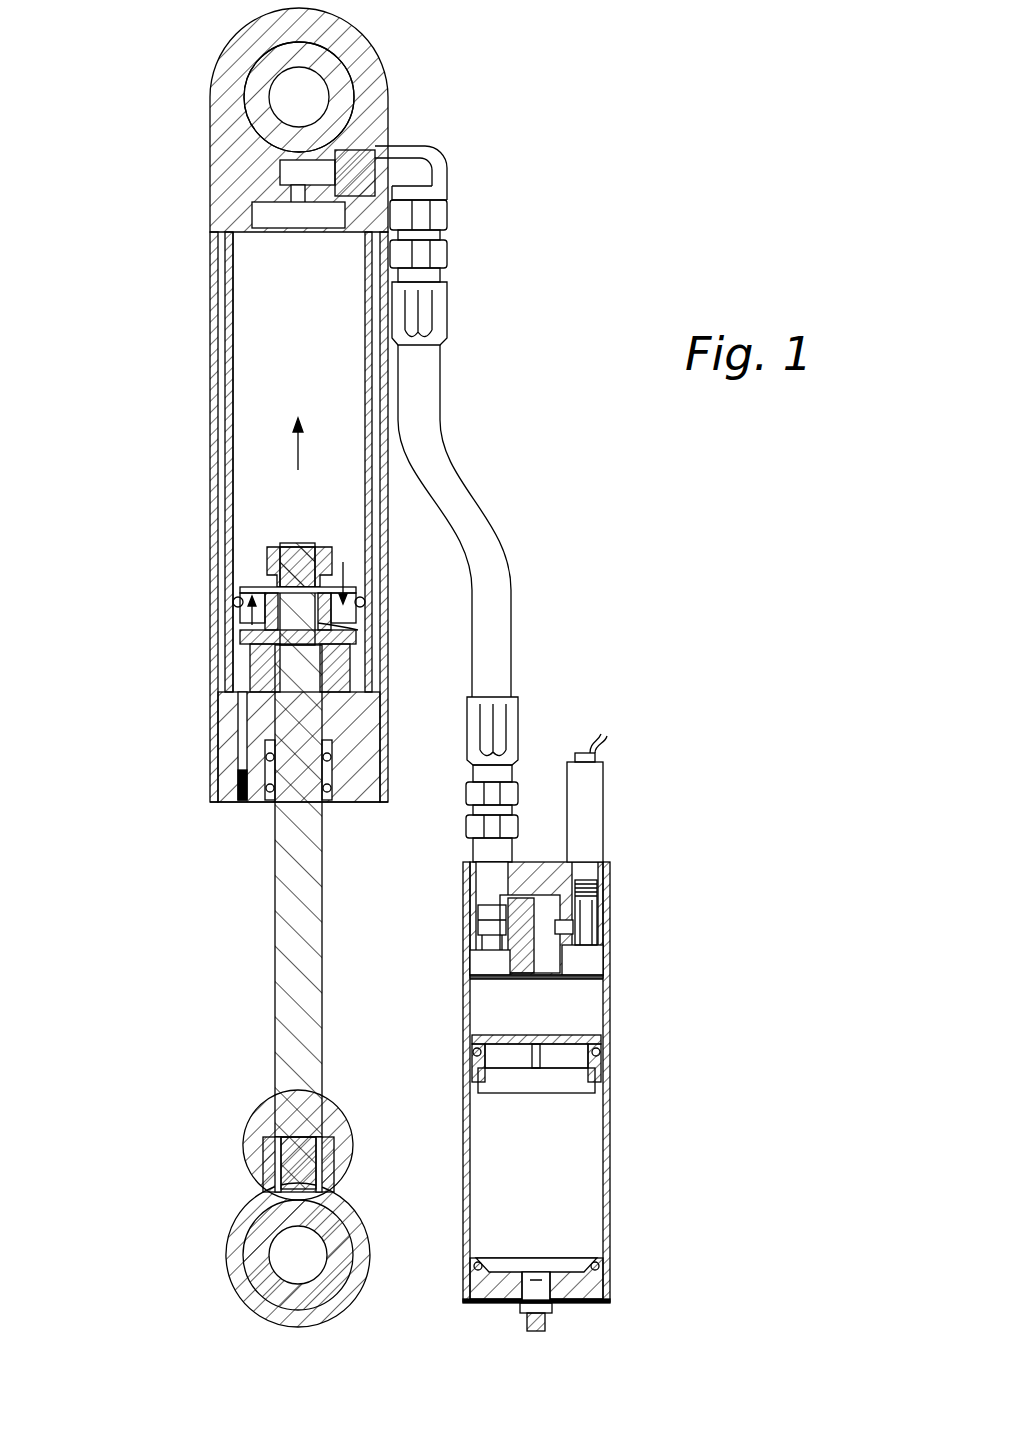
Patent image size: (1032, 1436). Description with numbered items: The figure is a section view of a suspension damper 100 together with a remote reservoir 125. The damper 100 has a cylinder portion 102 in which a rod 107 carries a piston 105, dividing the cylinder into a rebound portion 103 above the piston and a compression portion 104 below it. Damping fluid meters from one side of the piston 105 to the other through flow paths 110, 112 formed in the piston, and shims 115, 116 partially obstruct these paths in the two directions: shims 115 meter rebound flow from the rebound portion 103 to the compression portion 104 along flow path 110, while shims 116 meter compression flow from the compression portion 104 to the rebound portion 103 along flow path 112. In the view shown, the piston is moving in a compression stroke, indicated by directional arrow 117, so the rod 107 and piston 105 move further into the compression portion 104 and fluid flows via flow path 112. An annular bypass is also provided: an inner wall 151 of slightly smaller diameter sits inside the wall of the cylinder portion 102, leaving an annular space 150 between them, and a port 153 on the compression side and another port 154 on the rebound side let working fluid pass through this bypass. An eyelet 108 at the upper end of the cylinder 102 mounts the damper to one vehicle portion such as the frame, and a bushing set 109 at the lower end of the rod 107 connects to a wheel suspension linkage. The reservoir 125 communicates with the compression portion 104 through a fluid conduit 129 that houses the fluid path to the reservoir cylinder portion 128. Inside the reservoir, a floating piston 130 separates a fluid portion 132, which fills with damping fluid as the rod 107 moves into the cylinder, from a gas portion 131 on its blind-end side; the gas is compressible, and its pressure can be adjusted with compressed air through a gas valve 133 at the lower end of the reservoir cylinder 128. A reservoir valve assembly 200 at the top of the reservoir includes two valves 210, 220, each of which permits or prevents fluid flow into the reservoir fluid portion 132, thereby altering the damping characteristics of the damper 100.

The suspension damper 100 is at (542, 196).
The cylinder portion 102 is at (214, 340).
The rebound portion 103 is at (247, 662).
The compression portion 104 is at (262, 278).
The piston 105 is at (300, 540).
The rod 107 is at (285, 981).
The eyelet 108 is at (248, 92).
The bushing set 109 is at (250, 1241).
The flow path 110 is at (252, 620).
The flow path 112 is at (350, 572).
The shims 115 is at (250, 585).
The shims 116 is at (340, 630).
The directional arrow 117 is at (300, 466).
The reservoir 125 is at (738, 1070).
The cylinder portion 128 is at (612, 1123).
The fluid conduit 129 is at (460, 490).
The floating piston 130 is at (578, 1062).
The gas portion 131 is at (580, 1212).
The fluid portion 132 is at (580, 1008).
The gas valve 133 is at (548, 1326).
The annular space 150 is at (229, 416).
The inner wall 151 is at (236, 322).
The port 153 is at (368, 382).
The port 154 is at (370, 652).
The reservoir valve assembly 200 is at (622, 885).
The valve 210 is at (486, 922).
The valve 220 is at (600, 915).